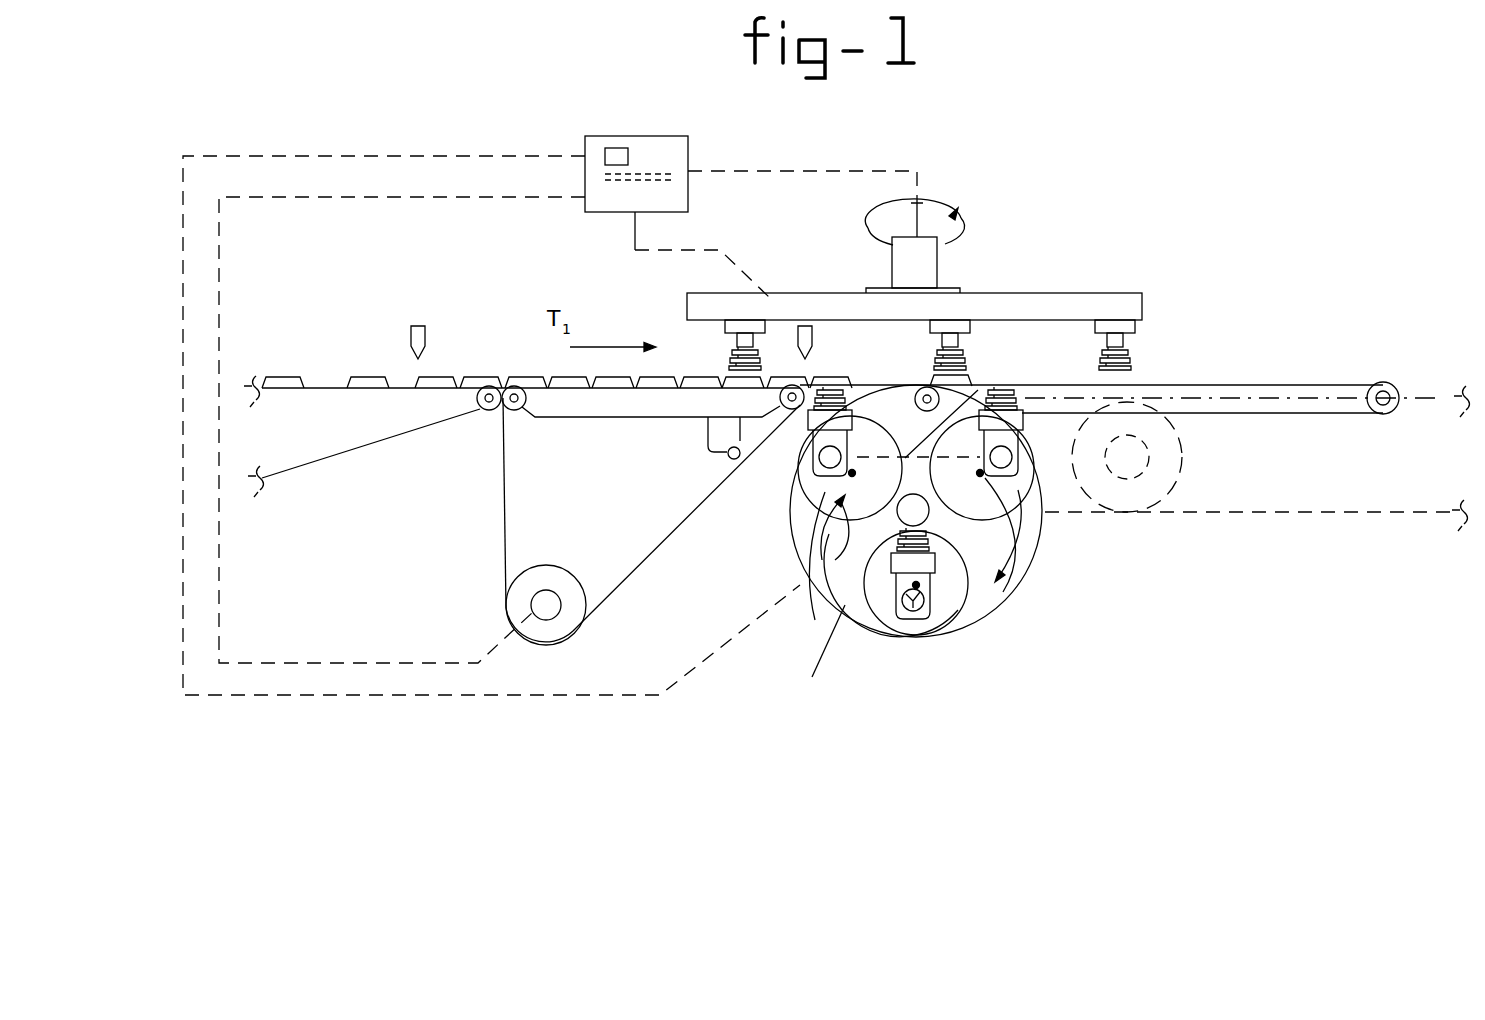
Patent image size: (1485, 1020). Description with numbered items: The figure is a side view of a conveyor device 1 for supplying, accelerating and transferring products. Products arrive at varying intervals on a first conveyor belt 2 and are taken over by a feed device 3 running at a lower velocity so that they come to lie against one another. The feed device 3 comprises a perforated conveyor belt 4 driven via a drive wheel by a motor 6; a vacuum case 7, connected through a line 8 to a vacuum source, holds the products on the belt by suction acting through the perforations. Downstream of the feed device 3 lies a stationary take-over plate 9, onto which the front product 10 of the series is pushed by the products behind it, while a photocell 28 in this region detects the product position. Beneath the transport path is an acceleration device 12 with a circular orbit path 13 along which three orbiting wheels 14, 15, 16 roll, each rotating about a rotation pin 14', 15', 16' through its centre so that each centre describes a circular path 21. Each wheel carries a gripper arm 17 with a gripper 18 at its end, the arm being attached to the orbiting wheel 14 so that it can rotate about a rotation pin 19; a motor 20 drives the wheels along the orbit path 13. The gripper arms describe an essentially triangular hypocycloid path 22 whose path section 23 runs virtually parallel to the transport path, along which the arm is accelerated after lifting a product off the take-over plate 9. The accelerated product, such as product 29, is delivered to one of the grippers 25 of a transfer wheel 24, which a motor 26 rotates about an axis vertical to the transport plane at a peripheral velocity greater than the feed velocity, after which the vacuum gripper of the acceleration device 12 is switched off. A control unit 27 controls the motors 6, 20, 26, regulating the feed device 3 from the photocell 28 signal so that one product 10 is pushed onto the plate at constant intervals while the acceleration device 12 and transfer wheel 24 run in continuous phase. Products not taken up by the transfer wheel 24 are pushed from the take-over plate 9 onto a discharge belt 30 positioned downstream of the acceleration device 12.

The conveyor device 1 is at (1092, 213).
The first conveyor belt 2 is at (344, 440).
The feed device 3 is at (563, 396).
The conveyor belt 4 is at (628, 583).
The motor 6 is at (559, 612).
The vacuum case 7 is at (665, 405).
The line 8 is at (739, 444).
The take-over plate 9 is at (878, 380).
The front product 10 is at (830, 385).
The acceleration device 12 is at (900, 520).
The circular orbit path 13 is at (1006, 598).
The orbiting wheel 14 is at (906, 606).
The rotation pin 14' is at (819, 655).
The orbiting wheel 15 is at (827, 485).
The rotation pin 15' is at (784, 474).
The orbiting wheel 16 is at (1008, 484).
The rotation pin 16' is at (1028, 452).
The gripper arm 17 is at (968, 604).
The gripper 18 is at (1028, 562).
The rotation pin 19 is at (908, 622).
The motor 20 is at (815, 620).
The circular path 21 is at (920, 586).
The hypocycloid path 22 is at (852, 473).
The path section 23 is at (992, 386).
The transfer wheel 24 is at (981, 293).
The grippers 25 is at (1130, 349).
The motor 26 is at (893, 264).
The control unit 27 is at (651, 142).
The photocell 28 is at (808, 332).
The product 29 is at (966, 356).
The discharge belt 30 is at (1268, 383).